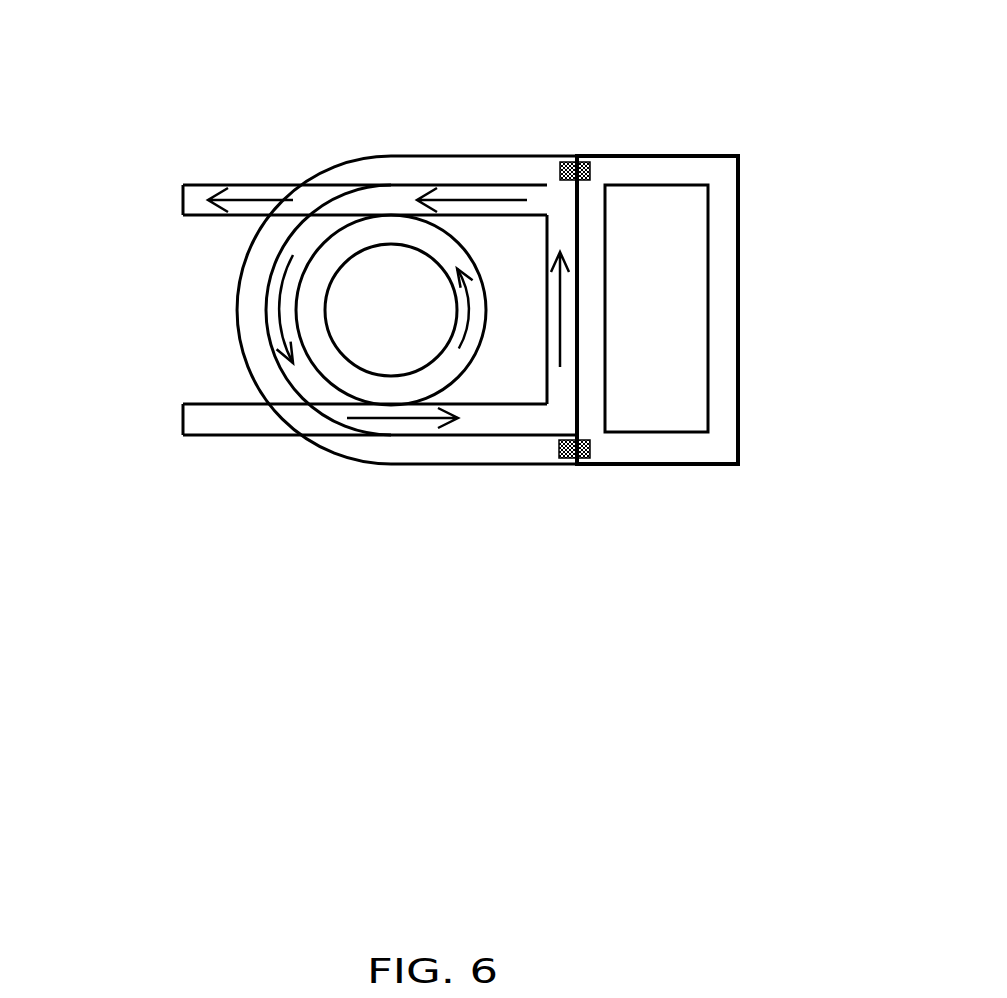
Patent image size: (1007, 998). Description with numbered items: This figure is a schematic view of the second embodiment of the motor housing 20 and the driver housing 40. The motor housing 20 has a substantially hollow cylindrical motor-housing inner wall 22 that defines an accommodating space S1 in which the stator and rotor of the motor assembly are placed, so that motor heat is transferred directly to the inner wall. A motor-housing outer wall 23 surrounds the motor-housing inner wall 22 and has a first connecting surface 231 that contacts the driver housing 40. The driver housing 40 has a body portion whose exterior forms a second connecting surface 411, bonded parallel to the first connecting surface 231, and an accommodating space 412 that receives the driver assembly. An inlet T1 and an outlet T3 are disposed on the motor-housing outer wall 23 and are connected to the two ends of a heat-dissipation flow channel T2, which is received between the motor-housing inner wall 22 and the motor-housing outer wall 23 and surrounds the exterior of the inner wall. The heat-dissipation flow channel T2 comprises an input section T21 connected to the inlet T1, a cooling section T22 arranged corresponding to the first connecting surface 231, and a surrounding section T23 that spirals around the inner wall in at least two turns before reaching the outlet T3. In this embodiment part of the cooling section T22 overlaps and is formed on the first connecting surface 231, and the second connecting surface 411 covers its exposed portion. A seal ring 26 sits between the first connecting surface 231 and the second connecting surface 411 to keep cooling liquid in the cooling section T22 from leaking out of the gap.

The motor housing 20 is at (128, 65).
The motor-housing inner wall 22 is at (472, 175).
The motor-housing outer wall 23 is at (383, 235).
The seal ring 26 is at (583, 160).
The driver housing 40 is at (700, 155).
The first connecting surface 231 is at (573, 417).
The second connecting surface 411 is at (578, 417).
The accommodating space 412 is at (682, 327).
The accommodating space S1 is at (409, 327).
The inlet T1 is at (182, 418).
The heat-dissipation flow channel T2 is at (235, 312).
The outlet T3 is at (182, 200).
The input section T21 is at (272, 418).
The cooling section T22 is at (560, 383).
The surrounding section T23 is at (543, 200).